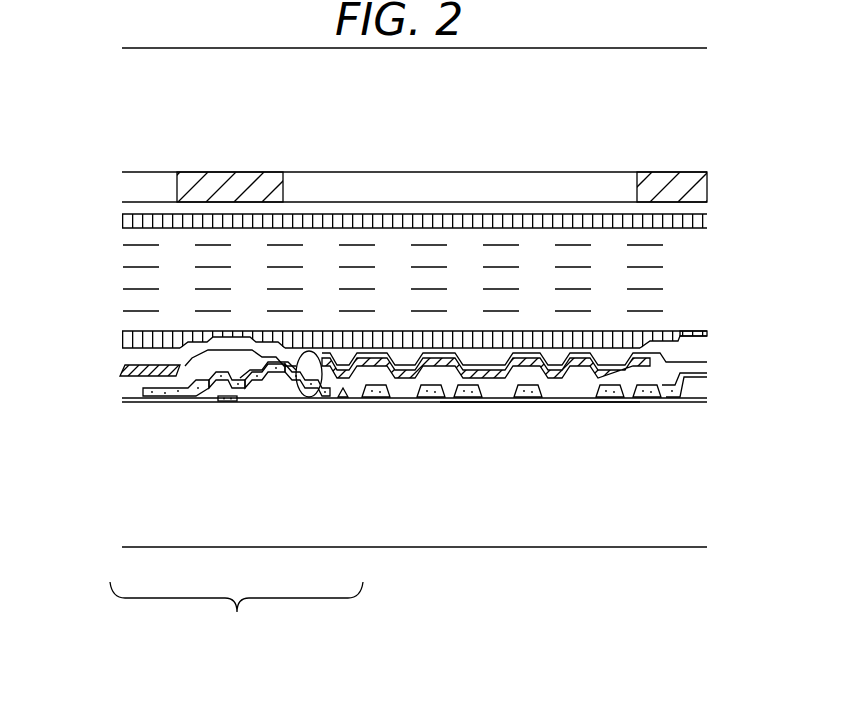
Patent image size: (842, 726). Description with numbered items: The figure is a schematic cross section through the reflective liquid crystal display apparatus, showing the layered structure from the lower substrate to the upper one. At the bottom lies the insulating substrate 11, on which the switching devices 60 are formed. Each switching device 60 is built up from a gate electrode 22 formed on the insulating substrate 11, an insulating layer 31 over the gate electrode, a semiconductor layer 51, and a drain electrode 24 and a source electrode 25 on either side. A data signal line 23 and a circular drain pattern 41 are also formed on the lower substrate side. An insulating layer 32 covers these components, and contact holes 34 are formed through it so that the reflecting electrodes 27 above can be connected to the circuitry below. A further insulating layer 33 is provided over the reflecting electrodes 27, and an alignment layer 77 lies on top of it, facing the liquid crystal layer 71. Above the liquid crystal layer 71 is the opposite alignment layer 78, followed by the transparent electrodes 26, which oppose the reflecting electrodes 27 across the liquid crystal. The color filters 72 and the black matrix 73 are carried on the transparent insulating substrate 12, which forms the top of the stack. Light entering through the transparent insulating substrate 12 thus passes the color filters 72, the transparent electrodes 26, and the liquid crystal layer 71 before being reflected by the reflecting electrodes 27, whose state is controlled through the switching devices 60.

The transparent insulating substrate 12 is at (148, 117).
The color filter 72 is at (292, 192).
The black matrix 73 is at (680, 190).
The transparent electrode 26 is at (133, 212).
The alignment layer 78 is at (670, 219).
The liquid crystal layer 71 is at (140, 298).
The alignment layer 77 is at (683, 330).
The insulating layer 33 is at (707, 333).
The contact hole 34 is at (297, 370).
The insulating layer 32 is at (140, 383).
The reflecting electrode 27 is at (707, 376).
The insulating substrate 11 is at (672, 473).
The data signal line 23 is at (145, 402).
The drain electrode 24 is at (190, 402).
The gate electrode 22 is at (230, 402).
The semiconductor layer 51 is at (257, 402).
The insulating layer 31 is at (288, 402).
The source electrode 25 is at (293, 402).
The circular drain pattern 41 is at (538, 400).
The switching device 60 is at (236, 611).